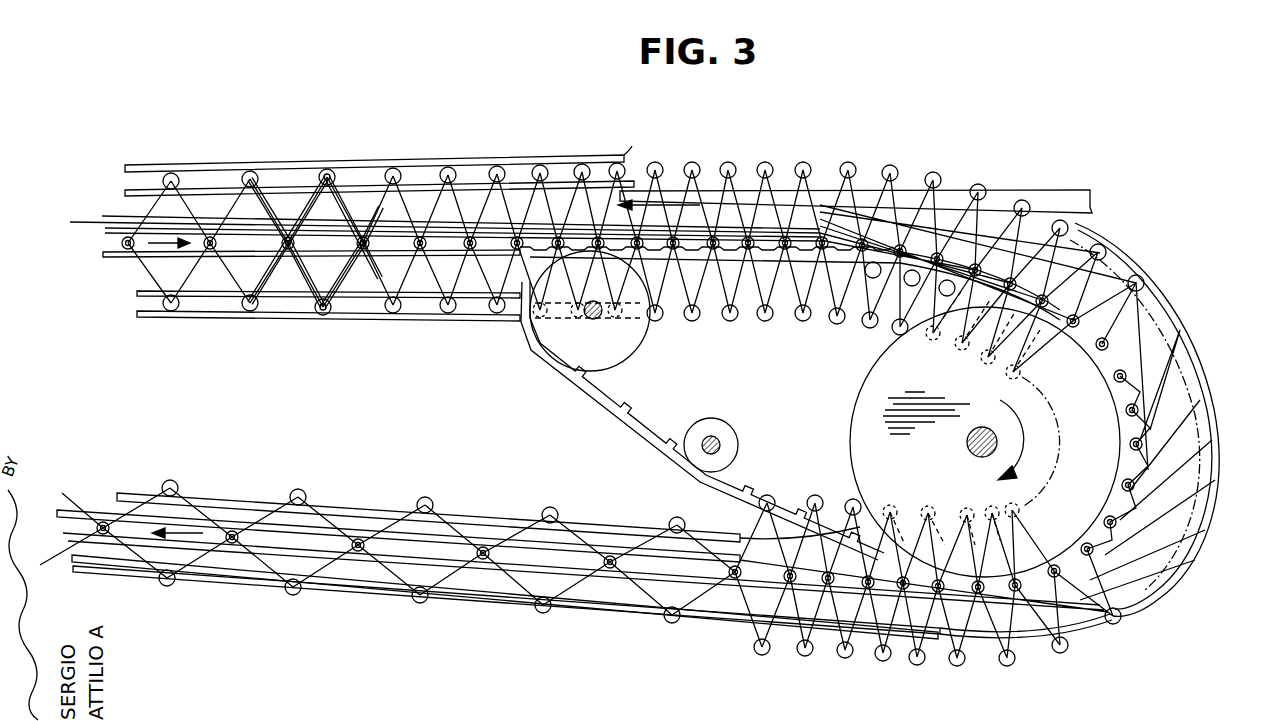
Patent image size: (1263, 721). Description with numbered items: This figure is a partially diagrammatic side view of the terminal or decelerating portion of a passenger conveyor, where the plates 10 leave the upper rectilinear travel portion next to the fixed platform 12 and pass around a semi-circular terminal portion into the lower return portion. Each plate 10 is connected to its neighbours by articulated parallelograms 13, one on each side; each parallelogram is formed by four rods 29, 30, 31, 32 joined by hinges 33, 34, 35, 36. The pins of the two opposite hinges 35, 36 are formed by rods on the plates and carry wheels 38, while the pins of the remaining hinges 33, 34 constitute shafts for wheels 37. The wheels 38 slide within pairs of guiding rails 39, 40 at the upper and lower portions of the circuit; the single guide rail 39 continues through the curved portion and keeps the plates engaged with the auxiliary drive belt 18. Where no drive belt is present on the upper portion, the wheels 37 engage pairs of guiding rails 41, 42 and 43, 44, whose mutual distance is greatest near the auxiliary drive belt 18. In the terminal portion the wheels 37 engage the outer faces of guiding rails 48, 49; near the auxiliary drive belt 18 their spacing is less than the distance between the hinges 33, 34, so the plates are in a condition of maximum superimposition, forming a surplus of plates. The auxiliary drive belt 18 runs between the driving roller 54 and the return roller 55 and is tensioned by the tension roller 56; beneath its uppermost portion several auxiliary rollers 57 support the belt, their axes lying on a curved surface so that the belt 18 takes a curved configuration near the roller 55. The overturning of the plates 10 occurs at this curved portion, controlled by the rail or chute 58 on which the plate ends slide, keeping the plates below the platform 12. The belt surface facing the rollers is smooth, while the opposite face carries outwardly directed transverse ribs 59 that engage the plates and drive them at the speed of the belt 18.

The plates 10 is at (1185, 360).
The fixed platform 12 is at (1057, 190).
The articulated parallelograms 13 is at (735, 174).
The auxiliary drive belt 18 is at (615, 418).
The rod 29 is at (348, 192).
The rod 30 is at (313, 179).
The rod 31 is at (342, 294).
The rod 32 is at (297, 284).
The hinge 33 is at (329, 173).
The hinge 34 is at (323, 312).
The hinge 35 is at (372, 248).
The hinge 36 is at (261, 231).
The wheels 37 is at (845, 168).
The wheels 38 is at (115, 242).
The guiding rail 39 is at (150, 232).
The guiding rail 40 is at (118, 257).
The guiding rail 41 is at (143, 165).
The guiding rail 42 is at (213, 189).
The guiding rail 43 is at (140, 297).
The guiding rail 44 is at (190, 318).
The guiding rail 48 is at (483, 520).
The guiding rail 49 is at (487, 598).
The driving roller 54 is at (860, 397).
The return roller 55 is at (627, 345).
The tension roller 56 is at (722, 432).
The auxiliary rollers 57 is at (880, 331).
The rail or chute 58 is at (1170, 301).
The ribs 59 is at (663, 456).